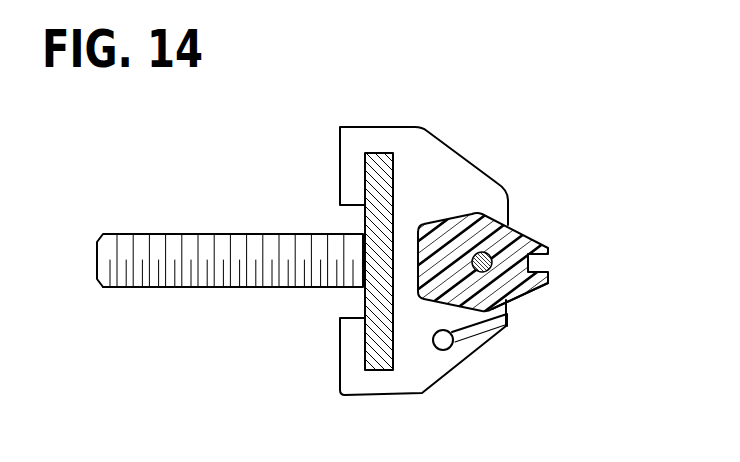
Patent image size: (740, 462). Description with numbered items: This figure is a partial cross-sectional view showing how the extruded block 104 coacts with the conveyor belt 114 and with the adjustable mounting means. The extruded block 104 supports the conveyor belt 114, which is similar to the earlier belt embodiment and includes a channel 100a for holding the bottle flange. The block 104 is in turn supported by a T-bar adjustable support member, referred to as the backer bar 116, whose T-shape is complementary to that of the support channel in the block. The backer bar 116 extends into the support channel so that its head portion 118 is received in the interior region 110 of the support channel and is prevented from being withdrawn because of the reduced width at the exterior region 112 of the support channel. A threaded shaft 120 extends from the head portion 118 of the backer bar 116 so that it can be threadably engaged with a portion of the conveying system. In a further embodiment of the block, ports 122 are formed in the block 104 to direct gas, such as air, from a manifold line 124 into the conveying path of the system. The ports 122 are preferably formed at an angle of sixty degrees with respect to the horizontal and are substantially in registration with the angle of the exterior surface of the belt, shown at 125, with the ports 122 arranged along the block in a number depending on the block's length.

The extruded block 104 is at (457, 174).
The interior region of the support channel 110 is at (382, 150).
The exterior region of the support channel 112 is at (358, 220).
The conveyor belt 114 is at (519, 233).
The backer bar 116 is at (173, 230).
The head portion 118 is at (365, 302).
The threaded shaft 120 is at (128, 279).
The ports 122 is at (484, 341).
The manifold line 124 is at (444, 350).
The angle of the exterior surface of the belt 125 is at (531, 307).
The channel 100a is at (552, 262).